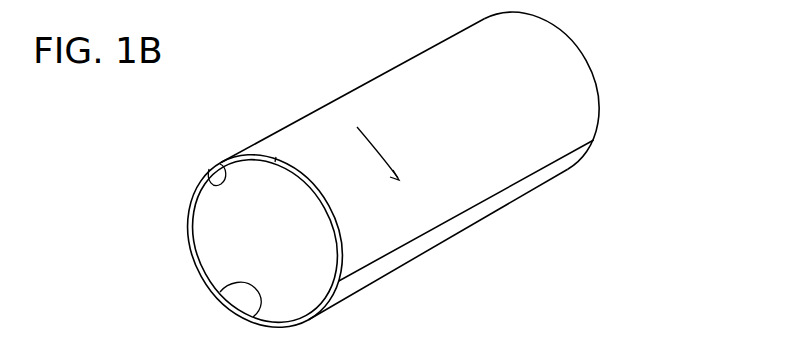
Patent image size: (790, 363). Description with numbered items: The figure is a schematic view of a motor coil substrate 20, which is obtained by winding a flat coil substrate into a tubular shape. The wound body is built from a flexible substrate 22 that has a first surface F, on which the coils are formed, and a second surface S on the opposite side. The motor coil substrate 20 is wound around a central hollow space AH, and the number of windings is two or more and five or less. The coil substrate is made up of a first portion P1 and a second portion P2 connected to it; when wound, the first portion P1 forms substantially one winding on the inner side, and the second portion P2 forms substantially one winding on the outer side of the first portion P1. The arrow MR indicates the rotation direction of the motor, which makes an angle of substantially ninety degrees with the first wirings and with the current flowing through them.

The motor coil substrate 20 is at (560, 50).
The flexible substrate 22 is at (358, 108).
The hollow space AH is at (217, 245).
The second surface S is at (208, 165).
The first surface F is at (275, 162).
The first portion P1 is at (220, 292).
The second portion P2 is at (357, 243).
The rotation direction MR is at (407, 153).